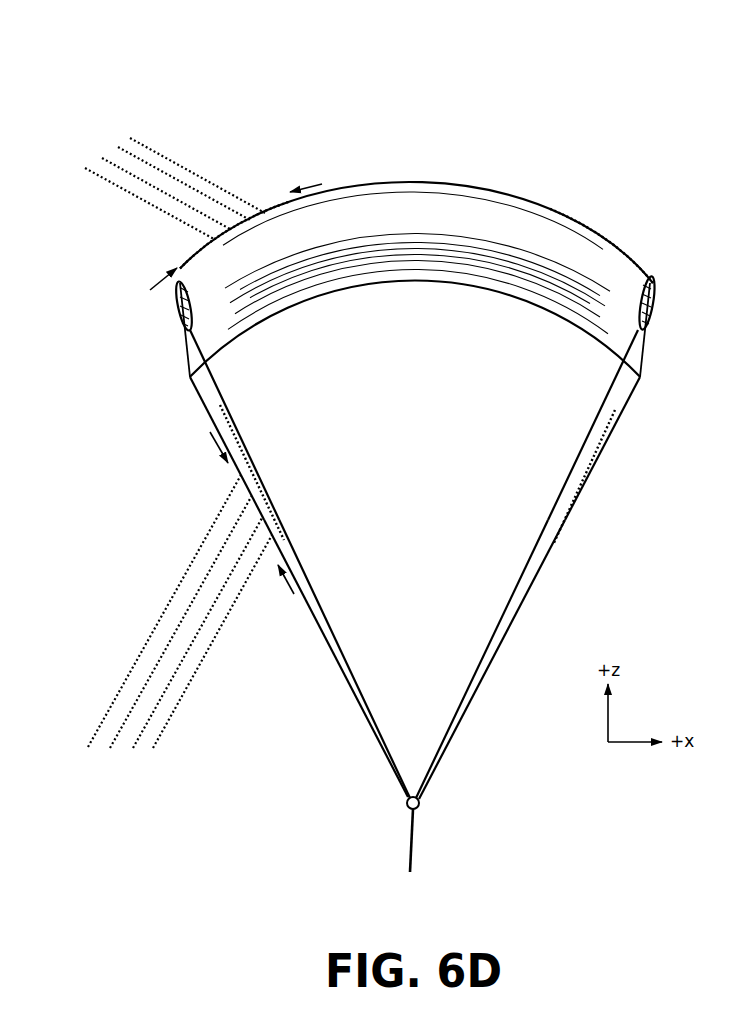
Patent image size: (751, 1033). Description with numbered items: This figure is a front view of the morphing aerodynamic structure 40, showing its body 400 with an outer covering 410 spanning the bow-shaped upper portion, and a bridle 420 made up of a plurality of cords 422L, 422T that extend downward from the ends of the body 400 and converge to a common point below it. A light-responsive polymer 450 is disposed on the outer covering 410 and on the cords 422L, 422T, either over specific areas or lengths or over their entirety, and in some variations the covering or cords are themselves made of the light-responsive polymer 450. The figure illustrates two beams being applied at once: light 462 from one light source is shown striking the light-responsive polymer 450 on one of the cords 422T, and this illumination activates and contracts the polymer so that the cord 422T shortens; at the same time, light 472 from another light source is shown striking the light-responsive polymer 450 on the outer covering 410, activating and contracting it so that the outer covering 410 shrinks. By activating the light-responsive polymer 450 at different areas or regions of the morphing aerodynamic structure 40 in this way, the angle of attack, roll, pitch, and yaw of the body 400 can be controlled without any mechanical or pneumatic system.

The morphing aerodynamic structure 40 is at (607, 130).
The body 400 is at (388, 145).
The outer covering 410 is at (446, 178).
The bridle 420 is at (203, 482).
The cord 422T is at (206, 408).
The cord 422L is at (287, 533).
The light-responsive polymer 450 is at (260, 207).
The light 462 is at (153, 627).
The light 472 is at (177, 157).